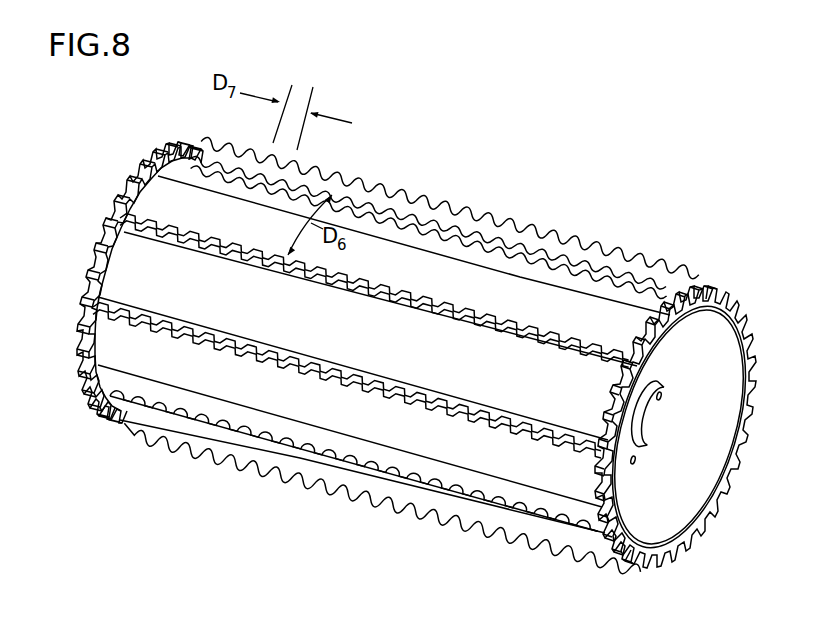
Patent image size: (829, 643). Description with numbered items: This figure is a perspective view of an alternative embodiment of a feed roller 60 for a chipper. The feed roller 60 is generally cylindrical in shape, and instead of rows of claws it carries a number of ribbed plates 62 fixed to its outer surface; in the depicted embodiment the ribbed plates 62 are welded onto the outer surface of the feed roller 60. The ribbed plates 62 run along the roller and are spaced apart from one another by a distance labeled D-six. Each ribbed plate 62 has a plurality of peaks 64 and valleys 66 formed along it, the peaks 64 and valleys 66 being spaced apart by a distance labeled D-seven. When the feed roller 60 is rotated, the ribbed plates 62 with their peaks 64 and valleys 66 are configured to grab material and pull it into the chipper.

The feed roller 60 is at (560, 208).
The ribbed plates 62 is at (463, 210).
The peaks 64 is at (400, 192).
The valleys 66 is at (404, 202).